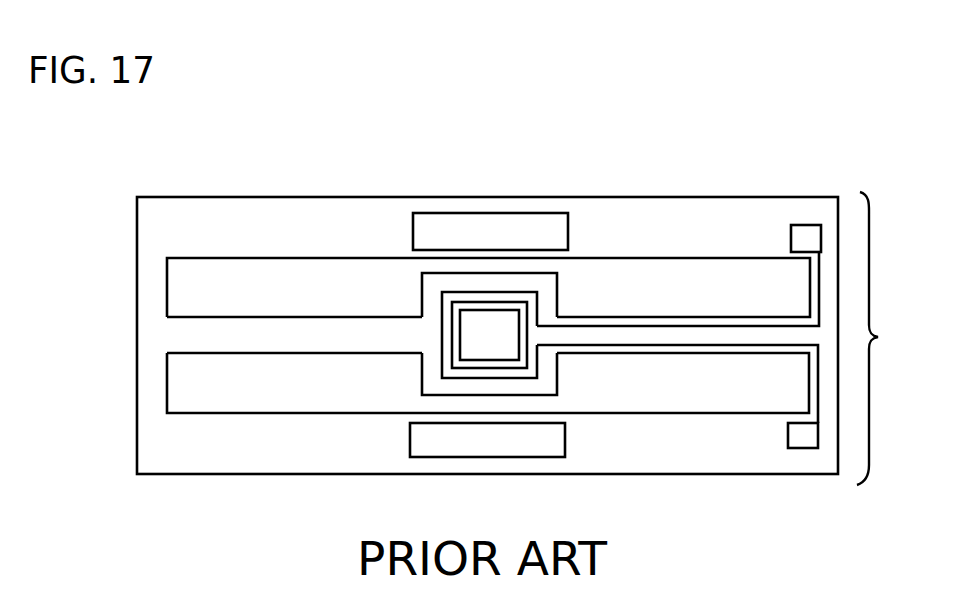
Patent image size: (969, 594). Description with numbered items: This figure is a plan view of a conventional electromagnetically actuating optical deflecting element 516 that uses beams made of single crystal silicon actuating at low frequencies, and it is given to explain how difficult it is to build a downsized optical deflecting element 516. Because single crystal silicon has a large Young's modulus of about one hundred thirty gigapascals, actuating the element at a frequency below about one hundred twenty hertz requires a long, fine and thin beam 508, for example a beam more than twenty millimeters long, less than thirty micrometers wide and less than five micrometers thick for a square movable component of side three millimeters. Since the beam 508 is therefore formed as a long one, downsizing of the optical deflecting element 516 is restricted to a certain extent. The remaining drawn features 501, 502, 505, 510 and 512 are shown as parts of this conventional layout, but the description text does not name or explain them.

The electrode 501 is at (522, 213).
The substrate 502 is at (322, 474).
The central element 505 is at (510, 308).
The beam 508 is at (293, 317).
The terminal pad 510 is at (800, 225).
The frame 512 is at (442, 317).
The optical deflecting element 516 is at (897, 338).